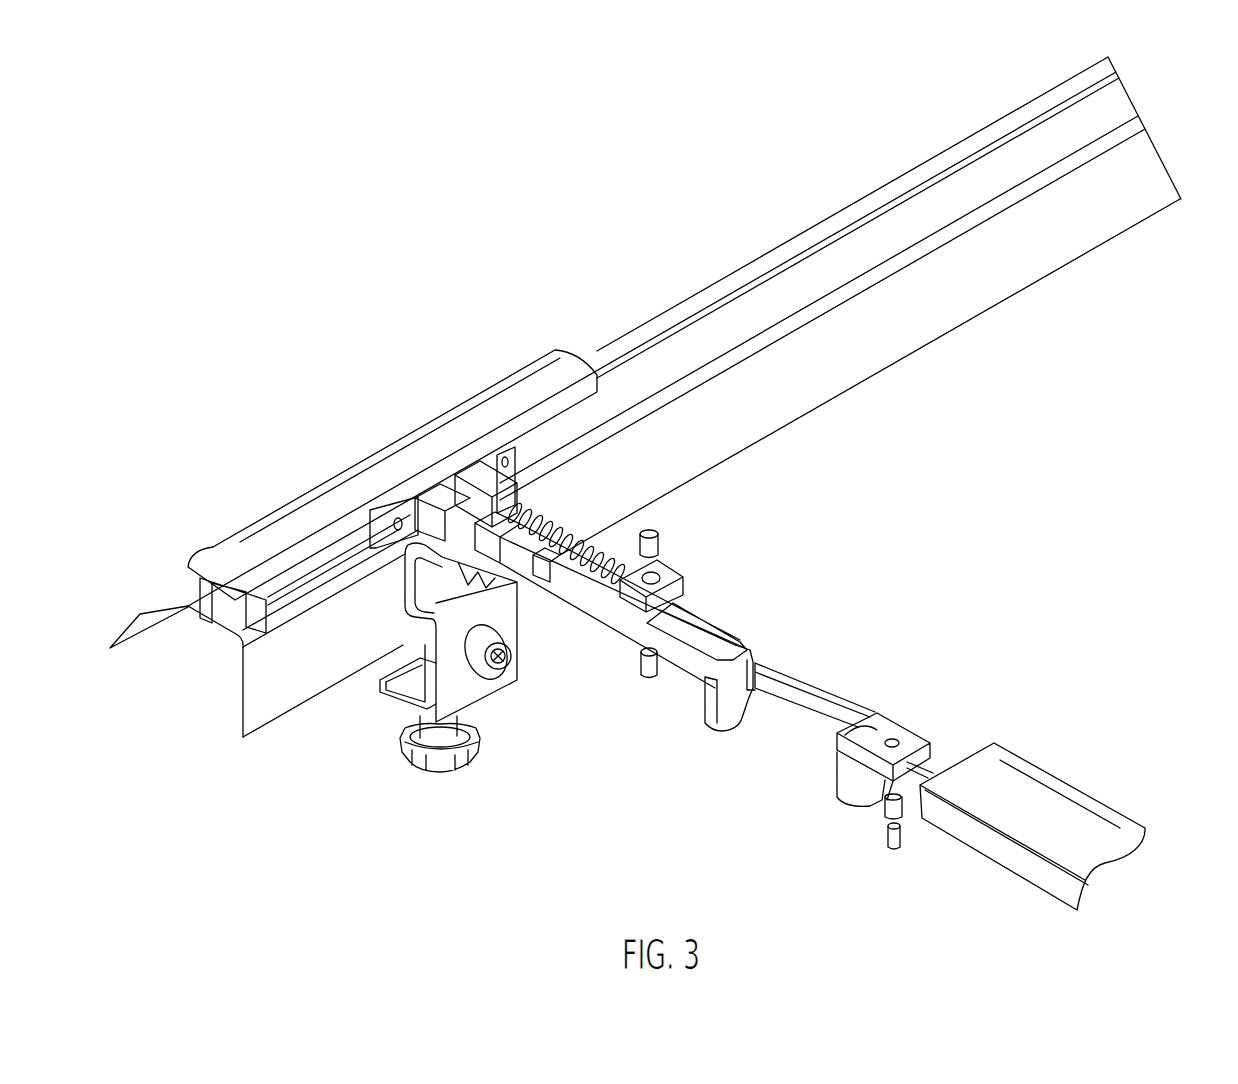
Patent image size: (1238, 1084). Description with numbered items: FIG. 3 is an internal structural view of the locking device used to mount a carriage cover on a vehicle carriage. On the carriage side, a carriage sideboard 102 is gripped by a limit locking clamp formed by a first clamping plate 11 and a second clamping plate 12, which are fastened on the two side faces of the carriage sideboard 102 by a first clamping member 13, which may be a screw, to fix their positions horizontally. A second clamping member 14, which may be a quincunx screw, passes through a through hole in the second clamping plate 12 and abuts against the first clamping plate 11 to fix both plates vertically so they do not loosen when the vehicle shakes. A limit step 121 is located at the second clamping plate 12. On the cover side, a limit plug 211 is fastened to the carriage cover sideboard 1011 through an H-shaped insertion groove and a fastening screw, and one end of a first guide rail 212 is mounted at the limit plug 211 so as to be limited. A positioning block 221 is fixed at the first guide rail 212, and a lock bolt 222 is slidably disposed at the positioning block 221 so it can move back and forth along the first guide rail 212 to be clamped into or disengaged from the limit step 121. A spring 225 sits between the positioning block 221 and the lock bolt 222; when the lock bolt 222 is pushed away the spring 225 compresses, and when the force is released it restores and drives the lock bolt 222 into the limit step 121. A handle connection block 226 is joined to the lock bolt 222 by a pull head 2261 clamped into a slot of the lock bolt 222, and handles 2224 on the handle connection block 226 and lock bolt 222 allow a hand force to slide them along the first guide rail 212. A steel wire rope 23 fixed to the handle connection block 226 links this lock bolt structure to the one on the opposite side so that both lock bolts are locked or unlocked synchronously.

The carriage sideboard 102 is at (285, 655).
The carriage cover sideboard 1011 is at (543, 383).
The limit plug 211 is at (463, 480).
The limit step 121 is at (407, 553).
The second clamping plate 12 is at (452, 680).
The first clamping plate 11 is at (410, 653).
The first clamping member 13 is at (498, 657).
The second clamping member 14 is at (450, 770).
The spring 225 is at (570, 535).
The positioning block 221 is at (668, 573).
The lock bolt 222 is at (588, 607).
The handle 2224 is at (737, 720).
The pull head 2261 is at (755, 665).
The handle connection block 226 is at (892, 735).
The steel wire rope 23 is at (994, 743).
The first guide rail 212 is at (1022, 795).